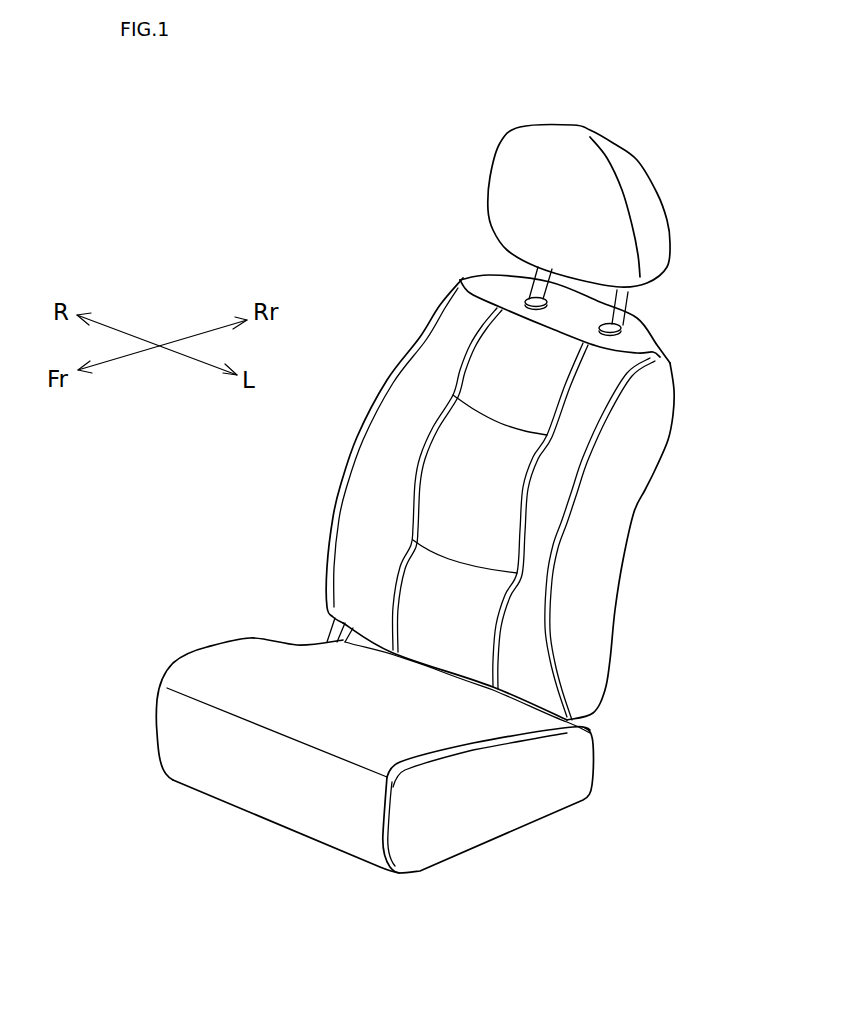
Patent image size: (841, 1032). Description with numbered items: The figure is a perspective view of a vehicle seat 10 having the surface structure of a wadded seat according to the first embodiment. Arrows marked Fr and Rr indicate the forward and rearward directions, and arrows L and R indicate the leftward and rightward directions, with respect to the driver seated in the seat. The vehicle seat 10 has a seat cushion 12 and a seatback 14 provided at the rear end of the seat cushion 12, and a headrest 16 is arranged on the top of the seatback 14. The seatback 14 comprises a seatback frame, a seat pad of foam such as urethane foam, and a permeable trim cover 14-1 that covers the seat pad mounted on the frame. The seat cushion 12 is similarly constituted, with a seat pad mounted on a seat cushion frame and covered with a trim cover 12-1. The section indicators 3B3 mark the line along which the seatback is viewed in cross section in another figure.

The vehicle seat 10 is at (345, 247).
The seat cushion 12 is at (187, 625).
The trim cover 12-1 is at (180, 670).
The seatback 14 is at (370, 360).
The trim cover (surface member) 14-1 is at (360, 510).
The headrest 16 is at (488, 167).
The cross-section line of FIG. 3 3B3 is at (340, 433).